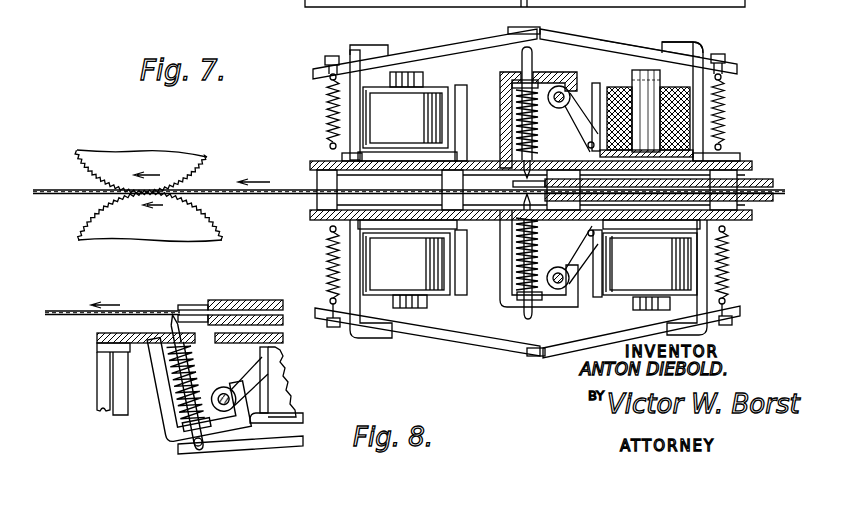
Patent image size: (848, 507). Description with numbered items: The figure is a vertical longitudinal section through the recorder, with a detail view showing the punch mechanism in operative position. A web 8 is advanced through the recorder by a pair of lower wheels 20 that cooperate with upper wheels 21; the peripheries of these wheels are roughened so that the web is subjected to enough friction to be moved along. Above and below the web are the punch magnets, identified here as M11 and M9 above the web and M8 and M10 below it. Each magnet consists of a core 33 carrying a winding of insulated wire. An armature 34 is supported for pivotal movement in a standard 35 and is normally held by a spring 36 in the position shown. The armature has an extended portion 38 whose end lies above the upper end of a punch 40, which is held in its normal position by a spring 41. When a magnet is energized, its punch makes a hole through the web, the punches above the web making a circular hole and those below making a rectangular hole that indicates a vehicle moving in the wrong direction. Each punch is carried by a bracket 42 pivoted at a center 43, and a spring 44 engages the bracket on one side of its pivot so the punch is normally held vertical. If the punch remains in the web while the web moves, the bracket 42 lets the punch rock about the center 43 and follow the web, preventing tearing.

In FIG. 7, the web 8 is at (36, 190).
In FIG. 8, the web 8 is at (55, 318).
In FIG. 7, the wheels 20 is at (88, 220).
In FIG. 7, the upper wheels 21 is at (182, 163).
In FIG. 7, the core 33 is at (653, 127).
In FIG. 7, the armature 34 is at (633, 52).
In FIG. 7, the standard 35 is at (703, 50).
In FIG. 7, the spring 36 is at (327, 126).
In FIG. 7, the extended portion 38 is at (482, 38).
In FIG. 7, the punch 40 is at (520, 60).
In FIG. 8, the punch 40 is at (188, 382).
In FIG. 7, the spring 41 is at (534, 128).
In FIG. 8, the spring 41 is at (180, 397).
In FIG. 7, the bracket 42 is at (502, 125).
In FIG. 8, the bracket 42 is at (228, 425).
In FIG. 7, the pivot 43 is at (558, 87).
In FIG. 8, the pivot 43 is at (225, 396).
In FIG. 8, the spring 44 is at (305, 423).
In FIG. 7, the punch magnet M8 is at (406, 270).
In FIG. 7, the punch magnet M9 is at (690, 100).
In FIG. 7, the punch magnet M10 is at (650, 271).
In FIG. 7, the punch magnet M11 is at (405, 110).